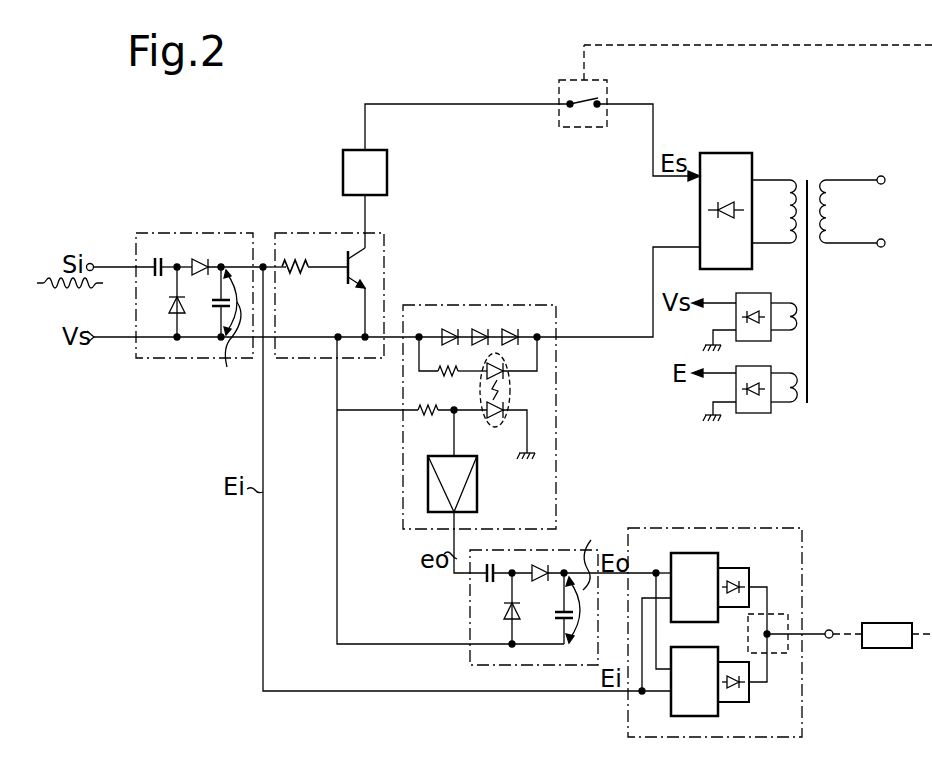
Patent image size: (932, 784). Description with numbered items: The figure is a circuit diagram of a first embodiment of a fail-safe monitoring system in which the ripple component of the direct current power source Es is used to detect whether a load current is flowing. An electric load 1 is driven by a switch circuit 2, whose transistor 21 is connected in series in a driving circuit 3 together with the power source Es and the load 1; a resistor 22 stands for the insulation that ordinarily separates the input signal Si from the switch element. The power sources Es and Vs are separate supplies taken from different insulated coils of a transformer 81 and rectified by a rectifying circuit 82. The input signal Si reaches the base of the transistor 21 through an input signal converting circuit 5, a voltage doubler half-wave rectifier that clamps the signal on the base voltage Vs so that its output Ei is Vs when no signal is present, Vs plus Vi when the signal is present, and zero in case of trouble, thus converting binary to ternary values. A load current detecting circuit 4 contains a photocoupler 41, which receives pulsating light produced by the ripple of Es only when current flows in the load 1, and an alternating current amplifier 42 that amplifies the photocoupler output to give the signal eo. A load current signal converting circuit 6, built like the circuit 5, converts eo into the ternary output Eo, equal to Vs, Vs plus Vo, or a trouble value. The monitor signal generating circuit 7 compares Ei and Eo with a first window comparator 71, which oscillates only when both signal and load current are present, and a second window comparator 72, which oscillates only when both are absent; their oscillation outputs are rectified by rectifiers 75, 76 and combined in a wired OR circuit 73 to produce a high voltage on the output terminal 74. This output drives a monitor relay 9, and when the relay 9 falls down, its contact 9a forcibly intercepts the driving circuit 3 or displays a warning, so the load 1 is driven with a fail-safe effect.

The electric load 1 is at (387, 173).
The switch circuit 2 is at (341, 269).
The driving circuit 3 is at (487, 105).
The load current detecting circuit 4 is at (465, 397).
The input signal converting circuit 5 is at (202, 231).
The load current signal converting circuit 6 is at (470, 608).
The monitor signal generating circuit 7 is at (726, 609).
The monitor relay 9 is at (890, 622).
The contact 9a is at (607, 83).
The transistor 21 is at (351, 283).
The resistor 22 is at (305, 277).
The photocoupler 41 is at (510, 386).
The alternating current amplifier 42 is at (477, 490).
The first window comparator 71 is at (694, 587).
The second window comparator 72 is at (694, 681).
The wired OR circuit 73 is at (773, 612).
The output terminal 74 is at (829, 630).
The rectifier 75 is at (730, 568).
The rectifier 76 is at (733, 702).
The transformer 81 is at (807, 175).
The rectifying circuit 82 is at (727, 150).